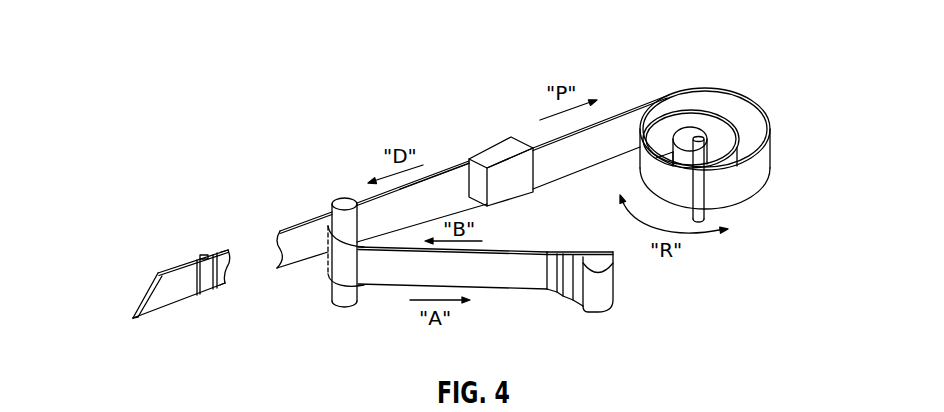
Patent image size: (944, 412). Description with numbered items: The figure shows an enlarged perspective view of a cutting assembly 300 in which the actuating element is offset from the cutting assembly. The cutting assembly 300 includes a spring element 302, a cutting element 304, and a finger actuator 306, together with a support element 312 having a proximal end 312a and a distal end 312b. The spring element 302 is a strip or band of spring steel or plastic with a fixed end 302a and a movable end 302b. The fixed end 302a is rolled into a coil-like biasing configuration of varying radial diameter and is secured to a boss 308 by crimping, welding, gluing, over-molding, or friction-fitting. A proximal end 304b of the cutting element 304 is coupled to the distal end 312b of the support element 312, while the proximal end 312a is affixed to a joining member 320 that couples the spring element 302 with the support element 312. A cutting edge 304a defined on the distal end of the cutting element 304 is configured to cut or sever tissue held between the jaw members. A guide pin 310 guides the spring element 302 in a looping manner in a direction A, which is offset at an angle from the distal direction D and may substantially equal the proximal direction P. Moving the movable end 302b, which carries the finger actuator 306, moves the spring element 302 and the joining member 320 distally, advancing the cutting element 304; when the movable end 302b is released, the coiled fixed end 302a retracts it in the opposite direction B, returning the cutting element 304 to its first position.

The cutting assembly 300 is at (182, 175).
The spring element 302 is at (458, 195).
The fixed end 302a is at (688, 134).
The movable end 302b is at (482, 278).
The cutting element 304 is at (168, 293).
The cutting edge 304a is at (145, 293).
The proximal end 304b is at (207, 258).
The finger actuator 306 is at (605, 272).
The boss 308 is at (698, 132).
The guide pin 310 is at (346, 196).
The support element 312 is at (308, 238).
The proximal end 312a is at (457, 163).
The distal end 312b is at (226, 276).
The joining member 320 is at (508, 141).